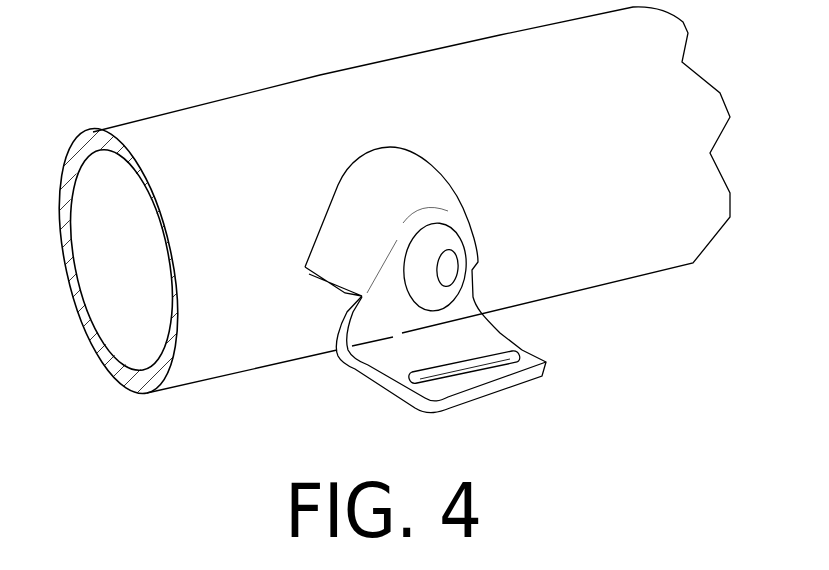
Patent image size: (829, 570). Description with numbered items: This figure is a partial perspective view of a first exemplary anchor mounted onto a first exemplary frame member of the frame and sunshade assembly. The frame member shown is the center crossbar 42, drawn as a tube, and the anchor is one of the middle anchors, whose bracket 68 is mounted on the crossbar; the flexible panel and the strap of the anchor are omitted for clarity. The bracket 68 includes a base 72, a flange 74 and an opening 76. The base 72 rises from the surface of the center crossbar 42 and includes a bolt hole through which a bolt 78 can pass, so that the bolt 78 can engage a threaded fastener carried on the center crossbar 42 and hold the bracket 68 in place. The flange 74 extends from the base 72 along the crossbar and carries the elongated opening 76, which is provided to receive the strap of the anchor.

The center crossbar 42 is at (327, 73).
The bracket 68 is at (453, 260).
The base 72 is at (387, 153).
The flange 74 is at (388, 383).
The opening 76 is at (502, 358).
The bolt 78 is at (452, 238).